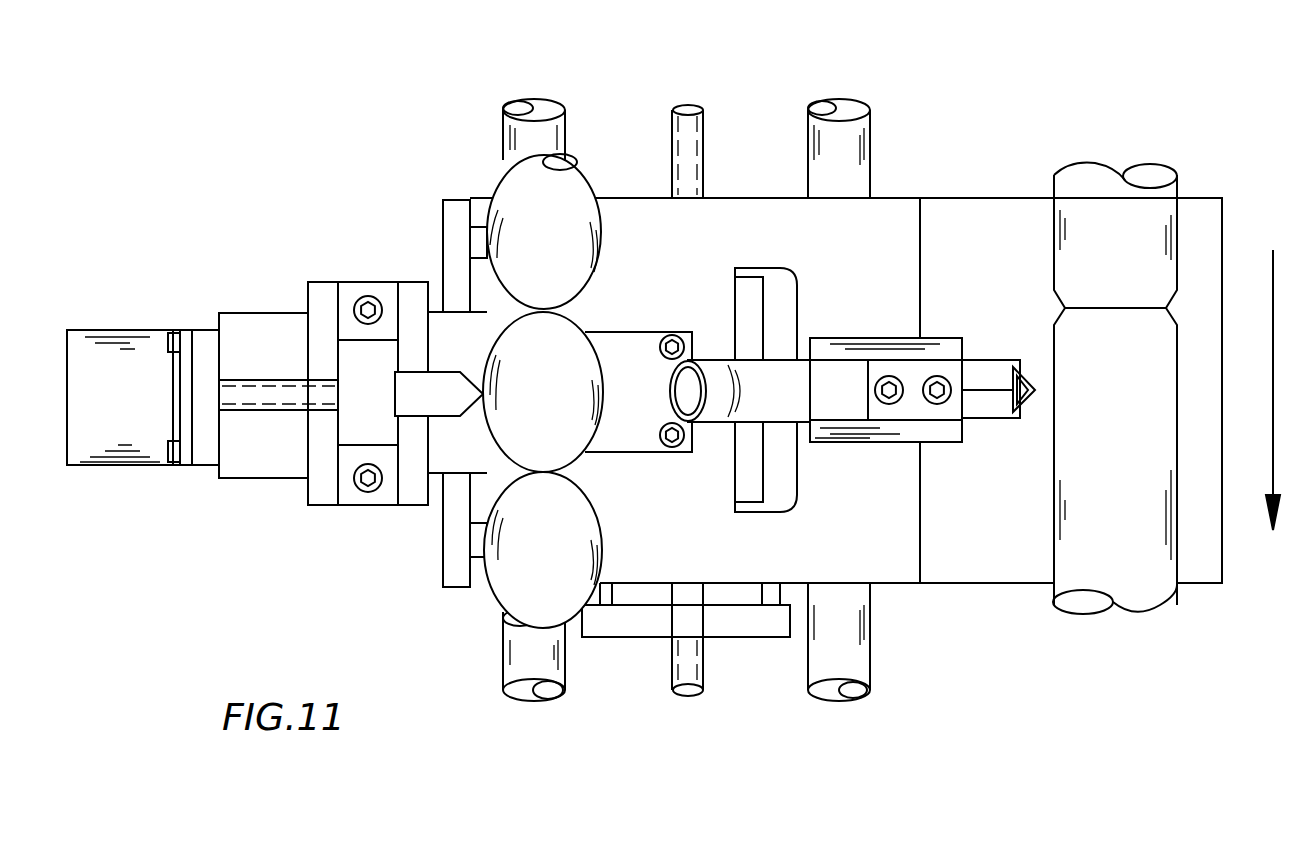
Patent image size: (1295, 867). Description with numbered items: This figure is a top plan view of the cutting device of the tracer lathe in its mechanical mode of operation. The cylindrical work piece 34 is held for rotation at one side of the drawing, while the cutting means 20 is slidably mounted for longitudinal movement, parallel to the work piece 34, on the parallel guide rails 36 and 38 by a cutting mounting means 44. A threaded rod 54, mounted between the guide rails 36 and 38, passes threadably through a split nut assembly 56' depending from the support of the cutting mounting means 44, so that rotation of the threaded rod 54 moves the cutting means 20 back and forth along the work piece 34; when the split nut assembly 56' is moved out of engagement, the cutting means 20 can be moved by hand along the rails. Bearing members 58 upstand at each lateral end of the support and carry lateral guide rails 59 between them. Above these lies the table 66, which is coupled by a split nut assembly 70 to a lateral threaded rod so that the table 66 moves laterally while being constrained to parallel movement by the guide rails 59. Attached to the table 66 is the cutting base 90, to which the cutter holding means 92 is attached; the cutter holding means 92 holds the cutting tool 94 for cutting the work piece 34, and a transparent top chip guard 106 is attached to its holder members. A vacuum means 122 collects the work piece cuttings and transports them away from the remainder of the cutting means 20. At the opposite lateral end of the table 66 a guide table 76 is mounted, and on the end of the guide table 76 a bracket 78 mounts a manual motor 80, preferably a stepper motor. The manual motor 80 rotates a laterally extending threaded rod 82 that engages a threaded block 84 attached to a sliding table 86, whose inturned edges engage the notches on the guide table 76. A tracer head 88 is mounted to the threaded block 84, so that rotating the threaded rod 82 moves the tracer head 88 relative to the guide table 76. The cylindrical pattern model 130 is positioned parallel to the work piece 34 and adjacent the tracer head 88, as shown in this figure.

The cutting means 20 is at (953, 318).
The work piece 34 is at (1150, 178).
The guide rail 36 is at (868, 103).
The guide rail 38 is at (507, 101).
The cutting mounting means 44 is at (416, 554).
The threaded rod 54 is at (703, 122).
The split nut assembly 56' is at (686, 630).
The bearing member 58 is at (443, 240).
The lateral guide rail 59 is at (478, 228).
The table 66 is at (873, 541).
The split nut assembly 70 is at (797, 310).
The guide table 76 is at (271, 464).
The bracket 78 is at (207, 455).
The manual motor 80 is at (126, 409).
The threaded rod 82 is at (272, 380).
The threaded block 84 is at (345, 352).
The sliding table 86 is at (412, 295).
The tracer head 88 is at (447, 409).
The cutting base 90 is at (868, 340).
The cutter holding means 92 is at (966, 350).
The cutting tool 94 is at (1045, 364).
The top chip guard 106 is at (997, 408).
The vacuum means 122 is at (722, 428).
The pattern model 130 is at (558, 222).